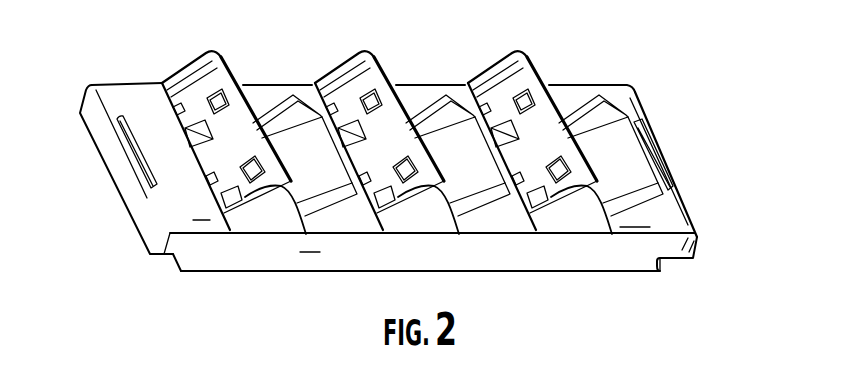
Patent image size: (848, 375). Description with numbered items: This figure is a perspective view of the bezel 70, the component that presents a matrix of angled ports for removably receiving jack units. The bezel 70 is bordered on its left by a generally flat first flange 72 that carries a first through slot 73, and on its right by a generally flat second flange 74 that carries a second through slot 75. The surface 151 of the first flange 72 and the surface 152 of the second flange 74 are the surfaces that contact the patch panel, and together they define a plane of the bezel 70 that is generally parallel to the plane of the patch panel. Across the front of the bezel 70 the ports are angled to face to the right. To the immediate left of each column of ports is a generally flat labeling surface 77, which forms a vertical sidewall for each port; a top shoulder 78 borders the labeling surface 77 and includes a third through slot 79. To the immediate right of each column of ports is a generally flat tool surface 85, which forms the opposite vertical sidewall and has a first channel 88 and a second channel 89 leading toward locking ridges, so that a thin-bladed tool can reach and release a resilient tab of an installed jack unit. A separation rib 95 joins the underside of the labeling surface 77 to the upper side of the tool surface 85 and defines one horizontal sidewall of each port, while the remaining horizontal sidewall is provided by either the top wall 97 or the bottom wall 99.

The bezel 70 is at (699, 84).
The first flange 72 is at (200, 211).
The first through slot 73 is at (127, 152).
The second flange 74 is at (623, 102).
The second through slot 75 is at (660, 154).
The labeling surface 77 is at (243, 144).
The top shoulder 78 is at (213, 58).
The third through slot 79 is at (190, 77).
The tool surface 85 is at (322, 174).
The first channel 88 is at (291, 134).
The second channel 89 is at (334, 206).
The separation rib 95 is at (577, 165).
The top wall 97 is at (413, 112).
The bottom wall 99 is at (459, 266).
The surface of first flange 151 is at (166, 262).
The surface of second flange 152 is at (677, 268).